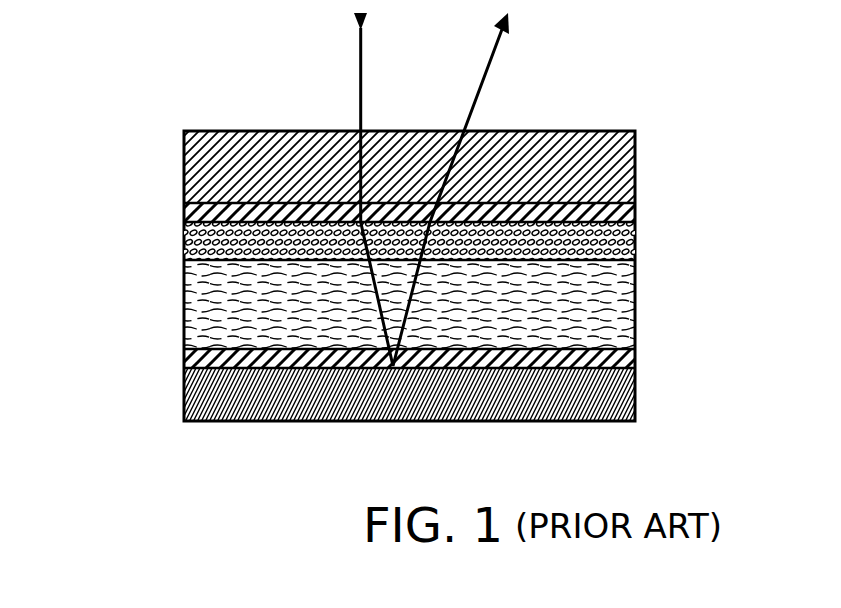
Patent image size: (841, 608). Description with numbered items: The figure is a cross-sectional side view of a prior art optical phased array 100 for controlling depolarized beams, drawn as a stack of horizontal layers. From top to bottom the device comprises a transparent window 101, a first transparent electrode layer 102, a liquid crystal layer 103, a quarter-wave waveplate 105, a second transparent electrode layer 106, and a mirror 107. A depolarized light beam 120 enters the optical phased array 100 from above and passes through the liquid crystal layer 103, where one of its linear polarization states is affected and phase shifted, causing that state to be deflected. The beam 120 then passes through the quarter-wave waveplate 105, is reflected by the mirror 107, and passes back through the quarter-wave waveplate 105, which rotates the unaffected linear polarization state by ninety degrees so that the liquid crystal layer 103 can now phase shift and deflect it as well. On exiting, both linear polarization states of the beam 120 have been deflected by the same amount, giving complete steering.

The optical phased array 100 is at (157, 125).
The transparent window 101 is at (184, 178).
The first transparent electrode layer 102 is at (636, 212).
The liquid crystal layer 103 is at (184, 245).
The quarter-wave waveplate 105 is at (185, 312).
The second transparent electrode layer 106 is at (636, 357).
The mirror 107 is at (185, 397).
The depolarized light beam 120 is at (358, 117).